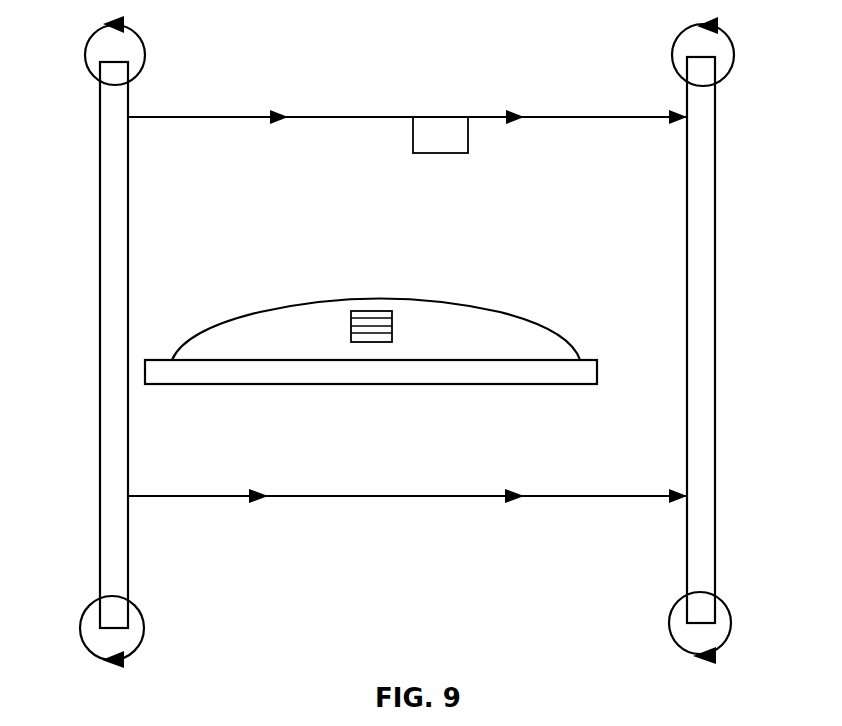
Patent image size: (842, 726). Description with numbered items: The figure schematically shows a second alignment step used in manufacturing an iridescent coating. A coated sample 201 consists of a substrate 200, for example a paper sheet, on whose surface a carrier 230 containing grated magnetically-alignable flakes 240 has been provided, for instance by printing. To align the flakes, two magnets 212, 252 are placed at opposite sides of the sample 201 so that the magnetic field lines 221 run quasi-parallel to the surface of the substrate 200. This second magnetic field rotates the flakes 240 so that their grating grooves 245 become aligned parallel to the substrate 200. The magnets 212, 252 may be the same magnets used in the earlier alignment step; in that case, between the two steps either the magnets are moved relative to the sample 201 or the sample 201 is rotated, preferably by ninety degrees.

The magnet 212 is at (99, 252).
The magnet 252 is at (716, 246).
The magnetic field lines 221 is at (235, 117).
The substrate 200 is at (590, 386).
The coated sample 201 is at (372, 286).
The carrier 230 is at (194, 346).
The magnetically-alignable flakes 240 is at (394, 328).
The grating grooves 245 is at (366, 320).